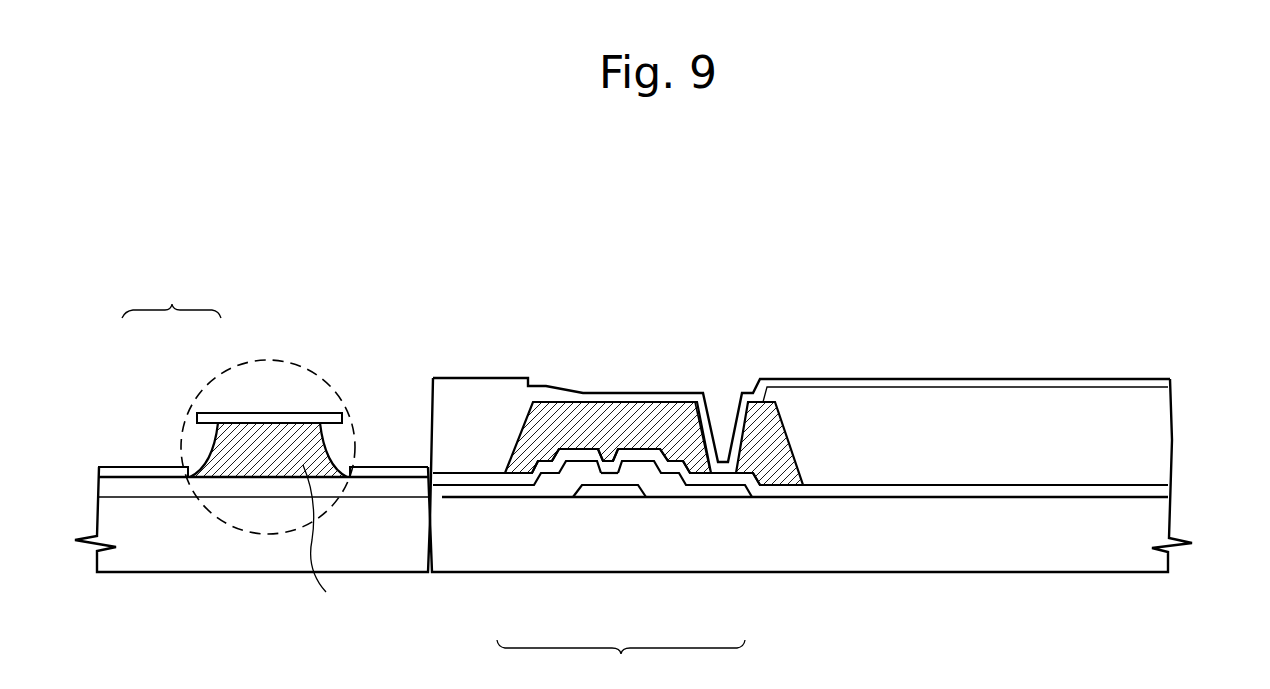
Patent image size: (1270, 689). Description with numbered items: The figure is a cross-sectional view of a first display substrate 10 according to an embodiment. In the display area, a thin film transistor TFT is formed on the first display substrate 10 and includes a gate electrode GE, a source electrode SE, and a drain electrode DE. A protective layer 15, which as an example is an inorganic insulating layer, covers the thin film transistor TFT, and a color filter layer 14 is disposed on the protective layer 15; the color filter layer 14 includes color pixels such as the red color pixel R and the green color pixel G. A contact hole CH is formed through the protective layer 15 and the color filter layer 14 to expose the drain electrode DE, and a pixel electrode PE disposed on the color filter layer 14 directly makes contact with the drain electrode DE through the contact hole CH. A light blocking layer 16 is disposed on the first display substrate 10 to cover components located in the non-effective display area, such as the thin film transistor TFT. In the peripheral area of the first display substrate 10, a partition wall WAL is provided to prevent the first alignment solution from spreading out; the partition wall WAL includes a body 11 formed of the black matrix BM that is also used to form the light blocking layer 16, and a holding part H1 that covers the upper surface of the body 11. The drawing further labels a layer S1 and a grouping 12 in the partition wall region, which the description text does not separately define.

The first display substrate 10 is at (110, 521).
The protective layer 15 is at (113, 490).
The first layer S1 is at (149, 471).
The layer stack 12 is at (171, 298).
The black matrix BM is at (450, 439).
The body 11 is at (319, 552).
The holding part H1 is at (232, 416).
The partition wall WAL is at (288, 358).
The gate electrode GE is at (613, 492).
The source electrode SE is at (497, 490).
The drain electrode DE is at (723, 490).
The thin film transistor TFT is at (621, 661).
The light blocking layer 16 is at (777, 482).
The pixel electrode PE is at (1158, 381).
The color filter layer 14 is at (1158, 442).
The red color pixel R is at (480, 444).
The green color pixel G is at (969, 444).
The contact hole CH is at (724, 408).